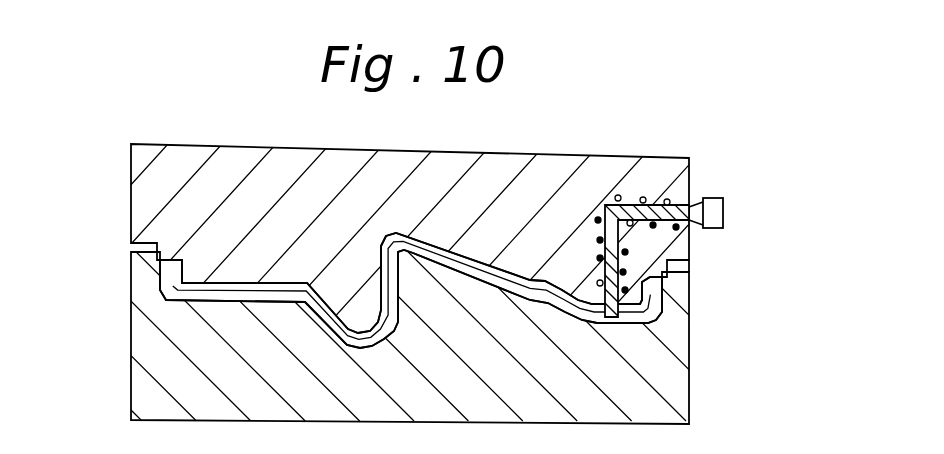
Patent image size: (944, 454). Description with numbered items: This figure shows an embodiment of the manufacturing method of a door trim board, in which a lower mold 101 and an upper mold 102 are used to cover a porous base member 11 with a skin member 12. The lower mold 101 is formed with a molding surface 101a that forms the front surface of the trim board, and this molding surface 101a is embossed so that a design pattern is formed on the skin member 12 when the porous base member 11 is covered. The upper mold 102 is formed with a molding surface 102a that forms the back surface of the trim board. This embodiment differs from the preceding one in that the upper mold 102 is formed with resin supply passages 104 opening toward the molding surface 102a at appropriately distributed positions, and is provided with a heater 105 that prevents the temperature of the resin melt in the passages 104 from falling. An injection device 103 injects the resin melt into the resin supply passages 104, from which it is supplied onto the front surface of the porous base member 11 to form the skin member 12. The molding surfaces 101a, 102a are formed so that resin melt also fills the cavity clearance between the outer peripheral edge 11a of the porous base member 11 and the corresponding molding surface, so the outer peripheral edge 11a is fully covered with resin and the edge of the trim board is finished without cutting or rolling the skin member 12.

The lower mold 101 is at (150, 399).
The upper mold 102 is at (156, 179).
The molding surface 101a is at (240, 300).
The molding surface 102a is at (230, 265).
The porous base member 11 is at (478, 262).
The outer peripheral edge 11a is at (160, 262).
The skin member 12 is at (527, 282).
The injection device 103 is at (724, 198).
The resin supply passages 104 is at (647, 213).
The heater 105 is at (670, 202).